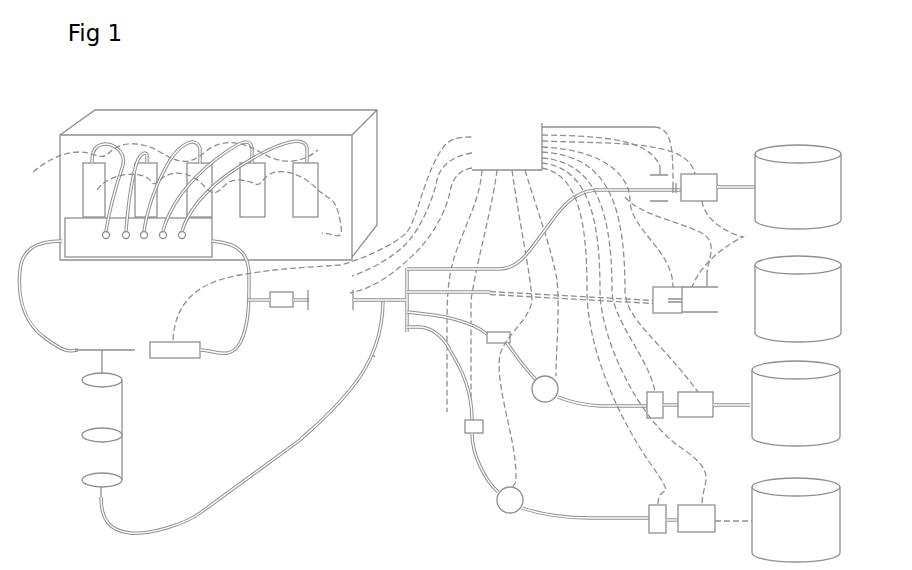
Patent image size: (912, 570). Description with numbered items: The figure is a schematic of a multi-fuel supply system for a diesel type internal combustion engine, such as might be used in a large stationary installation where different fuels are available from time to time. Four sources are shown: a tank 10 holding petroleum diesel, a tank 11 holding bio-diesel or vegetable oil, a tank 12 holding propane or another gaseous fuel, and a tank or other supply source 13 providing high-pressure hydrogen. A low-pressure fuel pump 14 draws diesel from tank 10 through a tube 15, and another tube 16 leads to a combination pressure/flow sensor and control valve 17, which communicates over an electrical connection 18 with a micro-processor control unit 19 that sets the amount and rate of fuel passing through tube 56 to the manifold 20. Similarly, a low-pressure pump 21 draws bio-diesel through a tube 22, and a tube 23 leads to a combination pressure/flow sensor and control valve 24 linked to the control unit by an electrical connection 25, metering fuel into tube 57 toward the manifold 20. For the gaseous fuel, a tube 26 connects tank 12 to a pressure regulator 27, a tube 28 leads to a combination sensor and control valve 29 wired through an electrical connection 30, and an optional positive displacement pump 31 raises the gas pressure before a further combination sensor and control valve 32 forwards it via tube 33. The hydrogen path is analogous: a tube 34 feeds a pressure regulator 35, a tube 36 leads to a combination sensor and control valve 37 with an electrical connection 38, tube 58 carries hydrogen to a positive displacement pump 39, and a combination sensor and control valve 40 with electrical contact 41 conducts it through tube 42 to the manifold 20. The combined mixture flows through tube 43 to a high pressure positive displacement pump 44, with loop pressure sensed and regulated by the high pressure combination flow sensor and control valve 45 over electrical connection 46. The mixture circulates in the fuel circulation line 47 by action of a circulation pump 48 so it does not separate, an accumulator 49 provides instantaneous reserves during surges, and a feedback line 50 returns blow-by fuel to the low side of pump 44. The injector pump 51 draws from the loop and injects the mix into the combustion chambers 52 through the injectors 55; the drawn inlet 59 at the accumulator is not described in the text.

The tank 10 is at (785, 148).
The tank 11 is at (840, 297).
The tank 12 is at (838, 403).
The tank or other supply source 13 is at (840, 520).
The low-pressure fuel pump 14 is at (702, 174).
The tube 15 is at (727, 186).
The tube 16 is at (661, 166).
The combination pressure/flow sensor and control valve 17 is at (652, 175).
The electrical connection 18 is at (661, 127).
The micro-processor control unit 19 is at (525, 125).
The manifold 20 is at (392, 350).
The low-pressure pump 21 is at (716, 313).
The tube 22 is at (735, 300).
The tube 23 is at (675, 283).
The combination pressure/flow sensor and control valve 24 is at (672, 313).
The electrical connection 25 is at (650, 280).
The tube 26 is at (737, 404).
The pressure regulator 27 is at (703, 415).
The tube 28 is at (668, 402).
The combination sensor and control valve 29 is at (642, 418).
The electrical connection 30 is at (645, 372).
The positive displacement pump 31 is at (553, 400).
The combination sensor and control valve 32 is at (520, 364).
The tube 33 is at (488, 332).
The tube 34 is at (743, 522).
The pressure regulator 35 is at (715, 508).
The tube 36 is at (672, 520).
The combination sensor and control valve 37 is at (649, 516).
The electrical connection 38 is at (632, 442).
The positive displacement pump 39 is at (514, 512).
The combination sensor and control valve 40 is at (484, 432).
The electrical contact 41 is at (447, 412).
The tube 42 is at (435, 340).
The tube 43 is at (366, 302).
The high pressure positive displacement pump 44 is at (311, 300).
The high pressure combination flow sensor and control valve 45 is at (270, 299).
The electrical connection 46 is at (371, 265).
The fuel circulation line 47 is at (24, 290).
The circulation pump 48 is at (199, 299).
The accumulator 49 is at (82, 467).
The feedback line 50 is at (200, 512).
The injector pump 51 is at (186, 199).
The combustion chambers 52 is at (305, 202).
The injectors 55 is at (182, 189).
The tube 56 is at (572, 212).
The tube 57 is at (578, 283).
The tube 58 is at (568, 512).
The inlet 59 is at (92, 369).